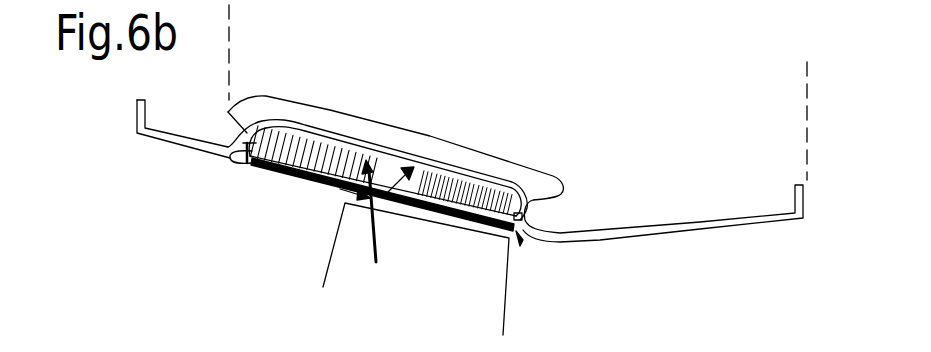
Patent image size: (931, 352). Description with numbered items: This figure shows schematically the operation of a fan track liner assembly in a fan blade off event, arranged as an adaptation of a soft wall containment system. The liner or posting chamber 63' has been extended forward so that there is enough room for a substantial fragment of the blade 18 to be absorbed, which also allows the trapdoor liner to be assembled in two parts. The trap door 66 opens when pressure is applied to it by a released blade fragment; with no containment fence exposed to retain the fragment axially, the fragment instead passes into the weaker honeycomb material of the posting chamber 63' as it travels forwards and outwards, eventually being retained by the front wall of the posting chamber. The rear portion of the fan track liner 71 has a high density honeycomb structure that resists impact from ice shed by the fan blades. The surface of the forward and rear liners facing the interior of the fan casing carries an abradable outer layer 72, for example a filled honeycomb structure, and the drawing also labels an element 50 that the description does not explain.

The posting chamber 63' is at (313, 110).
The trap door 66 is at (418, 190).
The rear portion of the fan track liner 71 is at (466, 190).
The abradable outer layer 72 is at (302, 185).
The edge element 50 is at (518, 240).
The blade 18 is at (438, 288).